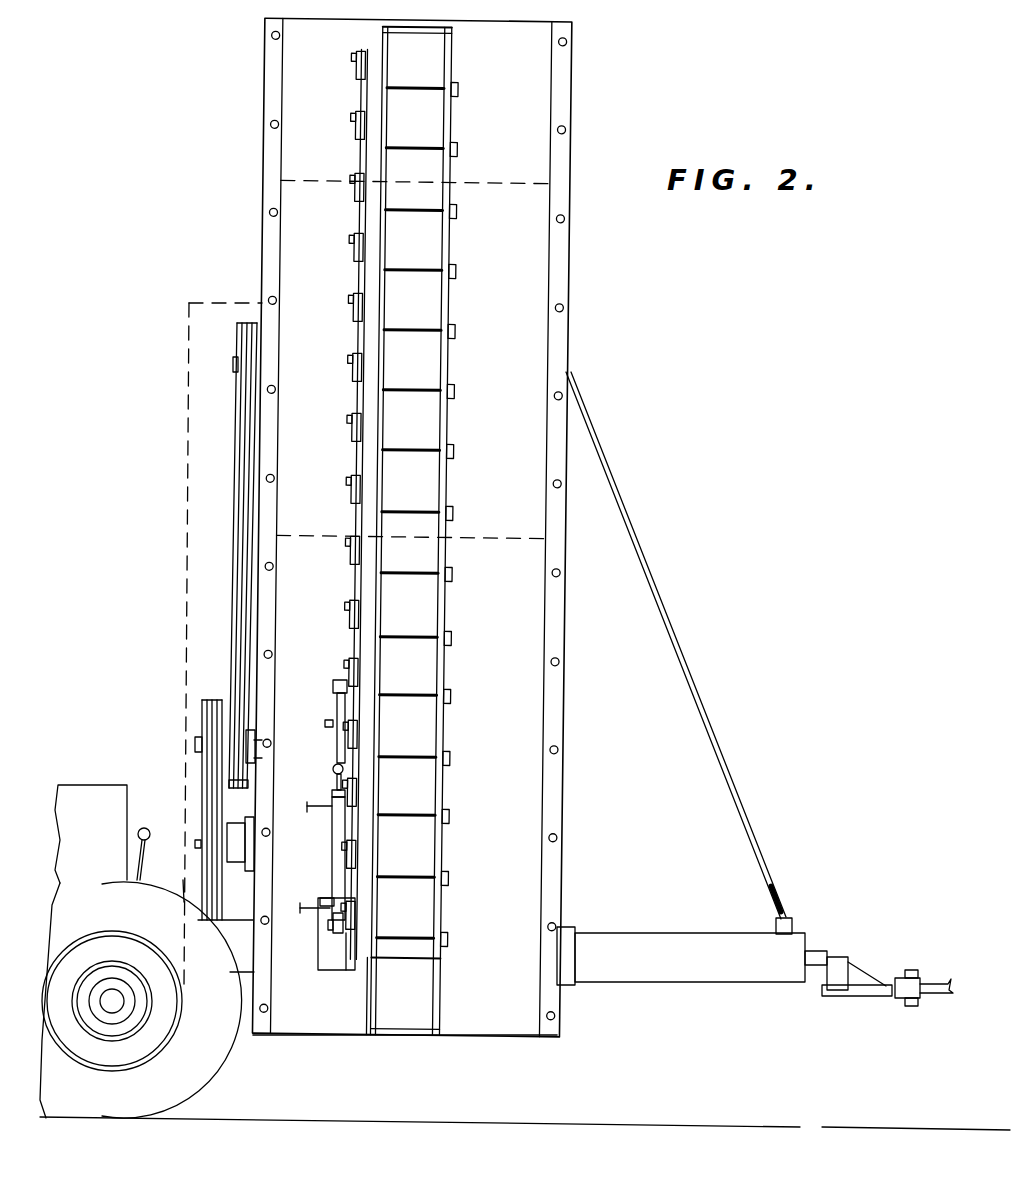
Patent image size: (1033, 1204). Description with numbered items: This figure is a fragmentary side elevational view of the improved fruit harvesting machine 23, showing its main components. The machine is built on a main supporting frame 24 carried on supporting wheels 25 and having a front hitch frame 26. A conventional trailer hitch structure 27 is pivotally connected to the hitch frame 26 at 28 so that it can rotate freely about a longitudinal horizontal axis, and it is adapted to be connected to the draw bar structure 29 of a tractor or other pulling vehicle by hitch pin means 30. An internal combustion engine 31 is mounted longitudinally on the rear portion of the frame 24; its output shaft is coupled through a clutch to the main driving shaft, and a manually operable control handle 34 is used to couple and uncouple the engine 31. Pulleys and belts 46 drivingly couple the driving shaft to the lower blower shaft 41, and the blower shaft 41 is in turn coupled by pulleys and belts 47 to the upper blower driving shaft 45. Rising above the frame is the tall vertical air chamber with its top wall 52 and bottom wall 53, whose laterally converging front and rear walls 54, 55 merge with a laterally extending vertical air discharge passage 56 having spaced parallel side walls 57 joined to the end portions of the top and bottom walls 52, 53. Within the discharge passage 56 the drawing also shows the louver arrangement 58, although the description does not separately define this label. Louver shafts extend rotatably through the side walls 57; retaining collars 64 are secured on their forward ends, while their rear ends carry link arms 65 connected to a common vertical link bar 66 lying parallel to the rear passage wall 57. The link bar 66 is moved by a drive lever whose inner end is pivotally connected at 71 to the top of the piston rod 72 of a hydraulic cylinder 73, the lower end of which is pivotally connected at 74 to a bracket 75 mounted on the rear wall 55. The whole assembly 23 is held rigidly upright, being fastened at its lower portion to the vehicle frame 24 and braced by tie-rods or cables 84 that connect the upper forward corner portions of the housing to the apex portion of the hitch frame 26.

The fruit harvesting machine 23 is at (231, 79).
The main supporting frame 24 is at (236, 1043).
The supporting wheels 25 is at (180, 1092).
The front hitch frame 26 is at (673, 931).
The trailer hitch structure 27 is at (893, 1000).
The pivotal connection 28 is at (857, 950).
The draw bar structure 29 is at (943, 1010).
The hitch pin means 30 is at (920, 975).
The internal combustion engine 31 is at (70, 787).
The control handle 34 is at (154, 852).
The blower shaft 41 is at (195, 742).
The upper blower driving shaft 45 is at (233, 361).
The pulleys and belts 46 is at (210, 818).
The pulleys and belts 47 is at (240, 560).
The top wall 52 is at (401, 33).
The bottom wall 53 is at (395, 1035).
The front wall 54 is at (500, 675).
The rear wall 55 is at (338, 1024).
The air discharge passage 56 is at (414, 924).
The side walls 57 is at (377, 1013).
The conveyor chain assembly 58 is at (433, 556).
The retaining collars 64 is at (454, 517).
The link arms 65 is at (372, 507).
The vertical link bar 66 is at (363, 460).
The pivotal connection 71 is at (332, 772).
The piston rod 72 is at (337, 783).
The hydraulic cylinder 73 is at (337, 843).
The pivotal connection 74 is at (333, 932).
The bracket 75 is at (330, 957).
The tie-rods or cables 84 is at (671, 608).